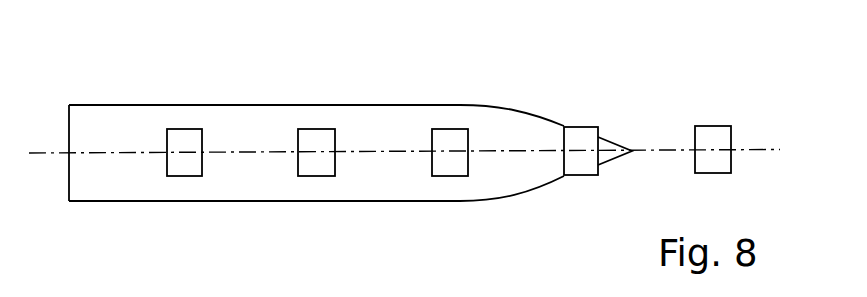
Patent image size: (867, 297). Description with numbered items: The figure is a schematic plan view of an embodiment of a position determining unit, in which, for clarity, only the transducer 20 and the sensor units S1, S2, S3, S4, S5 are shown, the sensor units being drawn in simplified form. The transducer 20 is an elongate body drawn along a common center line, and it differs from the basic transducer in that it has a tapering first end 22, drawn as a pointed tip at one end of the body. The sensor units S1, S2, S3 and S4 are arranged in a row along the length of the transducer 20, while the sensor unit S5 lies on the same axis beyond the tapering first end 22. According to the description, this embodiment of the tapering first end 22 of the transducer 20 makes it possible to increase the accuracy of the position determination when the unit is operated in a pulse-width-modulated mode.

The transducer 20 is at (266, 185).
The first end 22 is at (612, 146).
The sensor unit S1 is at (188, 137).
The sensor unit S2 is at (319, 137).
The sensor unit S3 is at (453, 137).
The sensor unit S4 is at (582, 135).
The sensor unit S5 is at (717, 133).